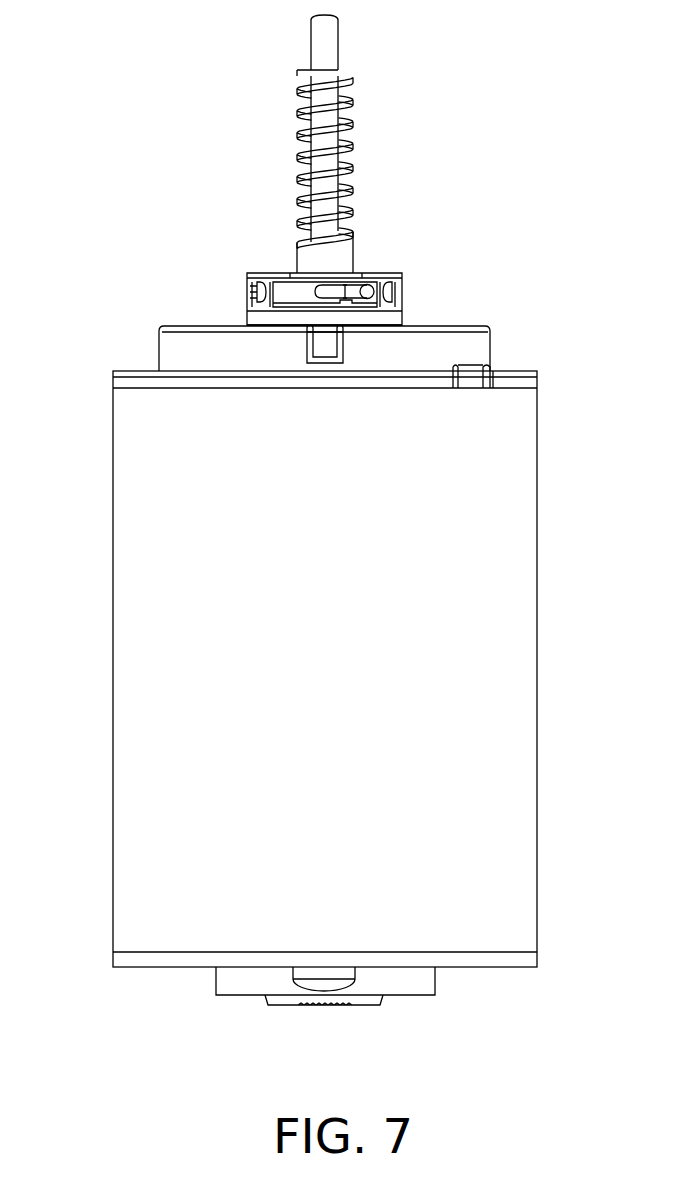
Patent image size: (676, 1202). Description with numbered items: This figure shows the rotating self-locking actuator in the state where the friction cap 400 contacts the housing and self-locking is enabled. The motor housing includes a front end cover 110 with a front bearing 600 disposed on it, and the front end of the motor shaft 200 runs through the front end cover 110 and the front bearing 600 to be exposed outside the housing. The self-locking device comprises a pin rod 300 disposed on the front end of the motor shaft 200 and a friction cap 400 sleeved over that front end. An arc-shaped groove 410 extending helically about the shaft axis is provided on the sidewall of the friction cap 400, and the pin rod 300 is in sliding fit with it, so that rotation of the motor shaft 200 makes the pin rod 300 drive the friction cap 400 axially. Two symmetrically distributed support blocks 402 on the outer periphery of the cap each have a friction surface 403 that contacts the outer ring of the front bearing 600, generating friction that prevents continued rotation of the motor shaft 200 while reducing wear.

The front end cover 110 is at (176, 350).
The motor shaft 200 is at (340, 157).
The pin rod 300 is at (362, 292).
The friction cap 400 is at (402, 272).
The support block 402 is at (250, 295).
The friction surface 403 is at (253, 305).
The arc-shaped groove 410 is at (323, 290).
The front bearing 600 is at (403, 317).